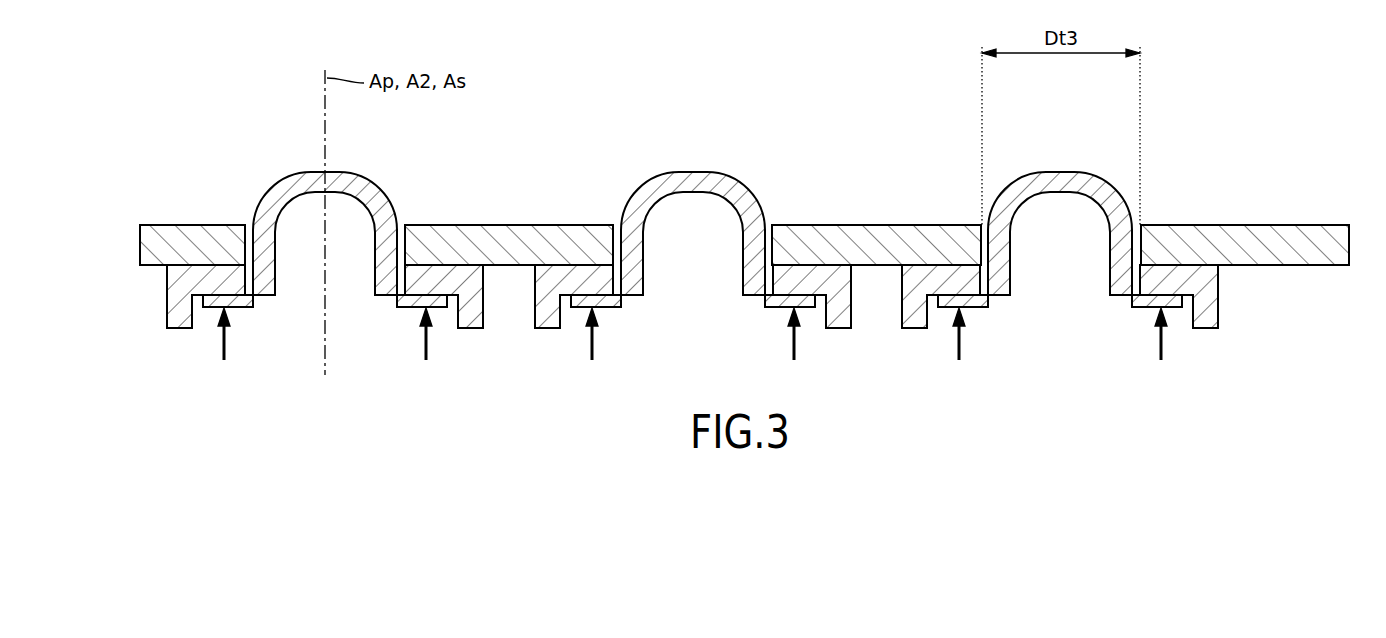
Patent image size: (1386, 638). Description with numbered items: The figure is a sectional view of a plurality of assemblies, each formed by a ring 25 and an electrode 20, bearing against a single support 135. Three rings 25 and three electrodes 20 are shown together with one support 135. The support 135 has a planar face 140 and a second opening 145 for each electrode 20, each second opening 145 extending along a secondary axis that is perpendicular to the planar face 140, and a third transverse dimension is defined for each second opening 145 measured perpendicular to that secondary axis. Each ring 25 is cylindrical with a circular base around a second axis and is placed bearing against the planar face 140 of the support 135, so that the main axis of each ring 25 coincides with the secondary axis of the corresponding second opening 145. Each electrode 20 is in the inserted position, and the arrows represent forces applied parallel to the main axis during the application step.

The electrode 20 is at (305, 166).
The ring 25 is at (200, 277).
The support 135 is at (1312, 232).
The planar face 140 is at (1318, 272).
The second opening 145 is at (250, 218).